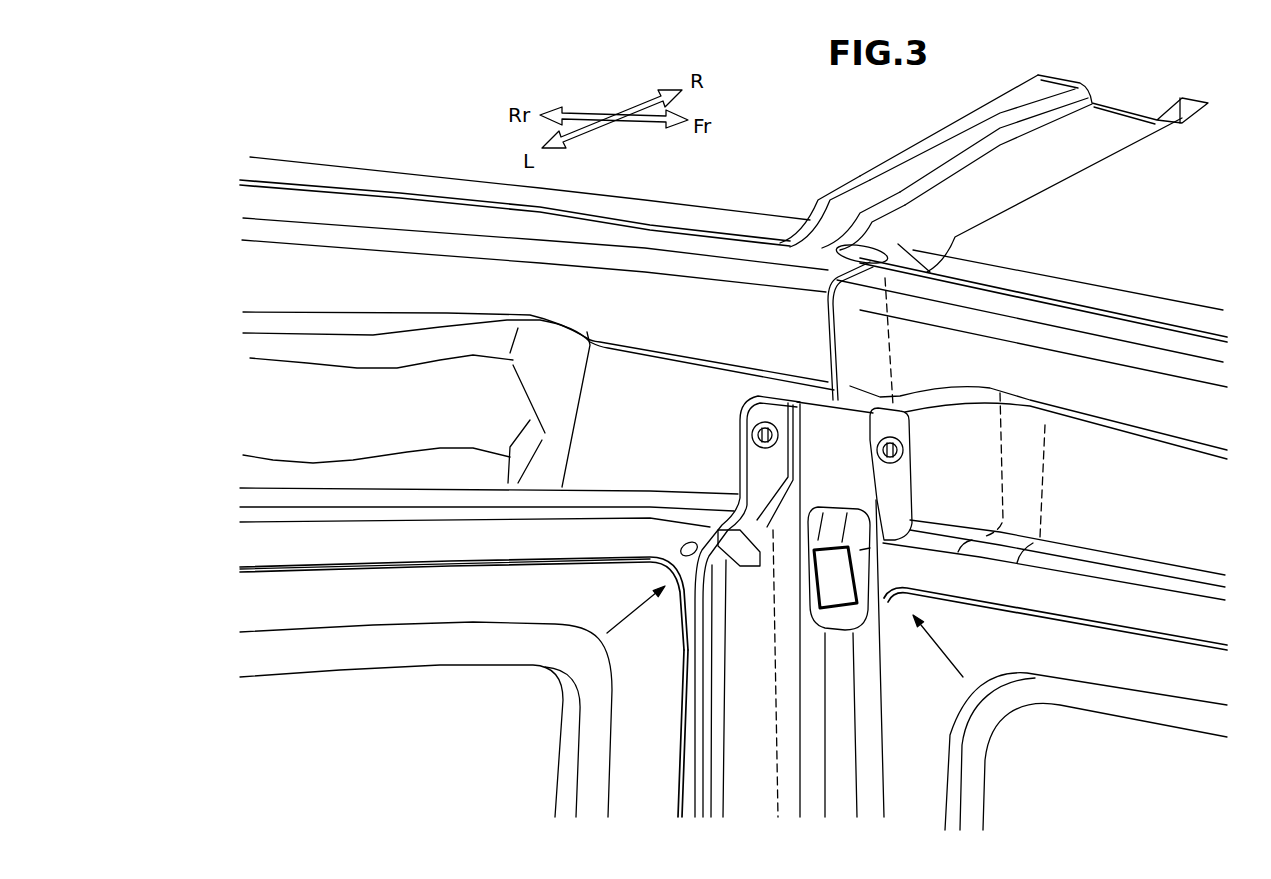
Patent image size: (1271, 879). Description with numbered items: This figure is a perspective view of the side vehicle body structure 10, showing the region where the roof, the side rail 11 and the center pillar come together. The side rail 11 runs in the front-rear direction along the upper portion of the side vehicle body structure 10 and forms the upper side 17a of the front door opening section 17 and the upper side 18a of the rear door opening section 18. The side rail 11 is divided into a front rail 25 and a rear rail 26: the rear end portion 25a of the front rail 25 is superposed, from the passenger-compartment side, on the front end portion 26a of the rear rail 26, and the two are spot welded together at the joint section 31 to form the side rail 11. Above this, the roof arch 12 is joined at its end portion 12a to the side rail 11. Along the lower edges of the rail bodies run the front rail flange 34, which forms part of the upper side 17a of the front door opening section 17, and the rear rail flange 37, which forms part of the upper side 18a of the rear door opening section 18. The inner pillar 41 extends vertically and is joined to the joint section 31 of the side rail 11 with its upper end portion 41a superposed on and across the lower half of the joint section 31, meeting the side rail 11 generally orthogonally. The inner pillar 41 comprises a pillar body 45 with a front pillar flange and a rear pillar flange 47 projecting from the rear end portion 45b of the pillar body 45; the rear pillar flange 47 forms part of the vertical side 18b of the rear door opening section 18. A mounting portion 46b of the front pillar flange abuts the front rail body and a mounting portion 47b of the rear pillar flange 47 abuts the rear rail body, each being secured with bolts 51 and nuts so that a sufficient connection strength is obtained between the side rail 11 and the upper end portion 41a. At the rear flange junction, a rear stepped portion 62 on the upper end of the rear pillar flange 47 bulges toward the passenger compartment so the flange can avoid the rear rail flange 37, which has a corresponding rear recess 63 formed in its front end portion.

The side vehicle body structure 10 is at (410, 131).
The side rail 11 is at (768, 138).
The roof arch 12 is at (1118, 140).
The end portion of roof arch 12a is at (932, 262).
The front door opening section 17 is at (1113, 777).
The upper side of front door opening section 17a is at (1132, 617).
The rear door opening section 18 is at (413, 742).
The upper side of rear door opening section 18a is at (472, 547).
The vertical side of rear door opening section 18b is at (678, 765).
The front rail 25 is at (1023, 357).
The rear end portion of front rail 25a is at (842, 332).
The rear rail 26 is at (683, 297).
The front end portion of rear rail 26a is at (875, 361).
The joint section 31 is at (826, 279).
The front rail flange 34 is at (1045, 587).
The rear rail flange 37 is at (360, 538).
The inner pillar 41 is at (887, 758).
The upper end portion of inner pillar 41a is at (840, 483).
The pillar body 45 is at (843, 703).
The rear end portion of pillar body 45b is at (708, 690).
The mounting portion of front pillar flange 46b is at (893, 427).
The rear pillar flange 47 is at (698, 643).
The mounting portion of rear pillar flange 47b is at (753, 463).
The bolt 51 is at (765, 430).
The rear stepped portion 62 is at (720, 545).
The rear recess 63 is at (688, 543).